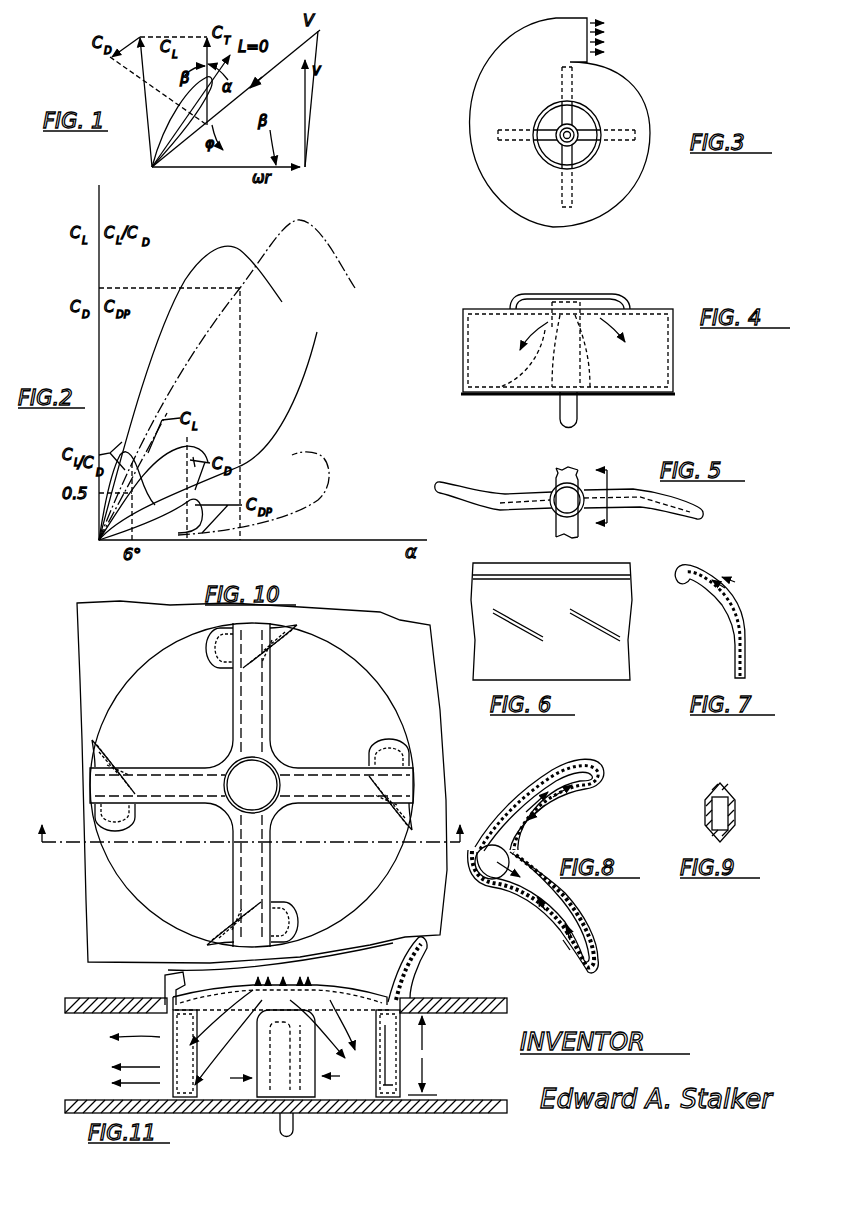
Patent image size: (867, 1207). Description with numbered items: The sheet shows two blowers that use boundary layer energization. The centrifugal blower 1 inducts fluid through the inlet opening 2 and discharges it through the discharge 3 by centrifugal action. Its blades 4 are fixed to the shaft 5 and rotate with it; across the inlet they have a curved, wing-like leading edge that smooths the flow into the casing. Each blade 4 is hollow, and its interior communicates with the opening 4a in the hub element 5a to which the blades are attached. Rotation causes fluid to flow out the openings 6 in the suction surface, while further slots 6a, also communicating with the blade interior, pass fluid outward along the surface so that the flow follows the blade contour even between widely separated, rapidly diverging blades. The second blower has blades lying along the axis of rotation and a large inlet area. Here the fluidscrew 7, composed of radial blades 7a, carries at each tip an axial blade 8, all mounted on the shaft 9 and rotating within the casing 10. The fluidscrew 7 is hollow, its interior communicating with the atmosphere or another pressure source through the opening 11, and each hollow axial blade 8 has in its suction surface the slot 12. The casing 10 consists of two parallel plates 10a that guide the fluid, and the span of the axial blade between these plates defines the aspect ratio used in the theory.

In FIG. 3, the centrifugal blower 1 is at (637, 172).
In FIG. 4, the centrifugal blower 1 is at (640, 307).
In FIG. 3, the inlet opening 2 is at (580, 118).
In FIG. 4, the inlet opening 2 is at (582, 296).
In FIG. 10, the inlet opening 2 is at (168, 720).
In FIG. 3, the discharge 3 is at (598, 62).
In FIG. 3, the blade 4 is at (625, 135).
In FIG. 4, the blade 4 is at (490, 316).
In FIG. 5, the blade 4 is at (660, 508).
In FIG. 6, the blade 4 is at (600, 672).
In FIG. 7, the blade 4 is at (747, 627).
In FIG. 8, the blade 4 is at (547, 773).
In FIG. 9, the blade 4 is at (733, 803).
In FIG. 5, the opening in hub element 4a is at (563, 493).
In FIG. 4, the shaft 5 is at (570, 407).
In FIG. 3, the hub element 5a is at (560, 142).
In FIG. 4, the hub element 5a is at (590, 377).
In FIG. 6, the opening 6 is at (532, 575).
In FIG. 7, the opening 6 is at (715, 577).
In FIG. 6, the slot 6a is at (560, 612).
In FIG. 8, the slot 6a is at (567, 942).
In FIG. 3, the fluidscrew 7 is at (562, 130).
In FIG. 5, the fluidscrew 7 is at (604, 495).
In FIG. 10, the fluidscrew 7 is at (322, 797).
In FIG. 11, the fluidscrew 7 is at (205, 992).
In FIG. 10, the radial blade 7a is at (257, 860).
In FIG. 11, the axial blade 8 is at (310, 1057).
In FIG. 8, the shaft 9 is at (560, 968).
In FIG. 11, the shaft 9 is at (293, 1125).
In FIG. 10, the casing 10 is at (373, 620).
In FIG. 11, the casing 10 is at (410, 996).
In FIG. 11, the parallel plate 10a is at (100, 1098).
In FIG. 10, the opening 11 is at (258, 783).
In FIG. 11, the opening 11 is at (260, 1013).
In FIG. 10, the slot 12 is at (262, 660).
In FIG. 11, the slot 12 is at (382, 1057).